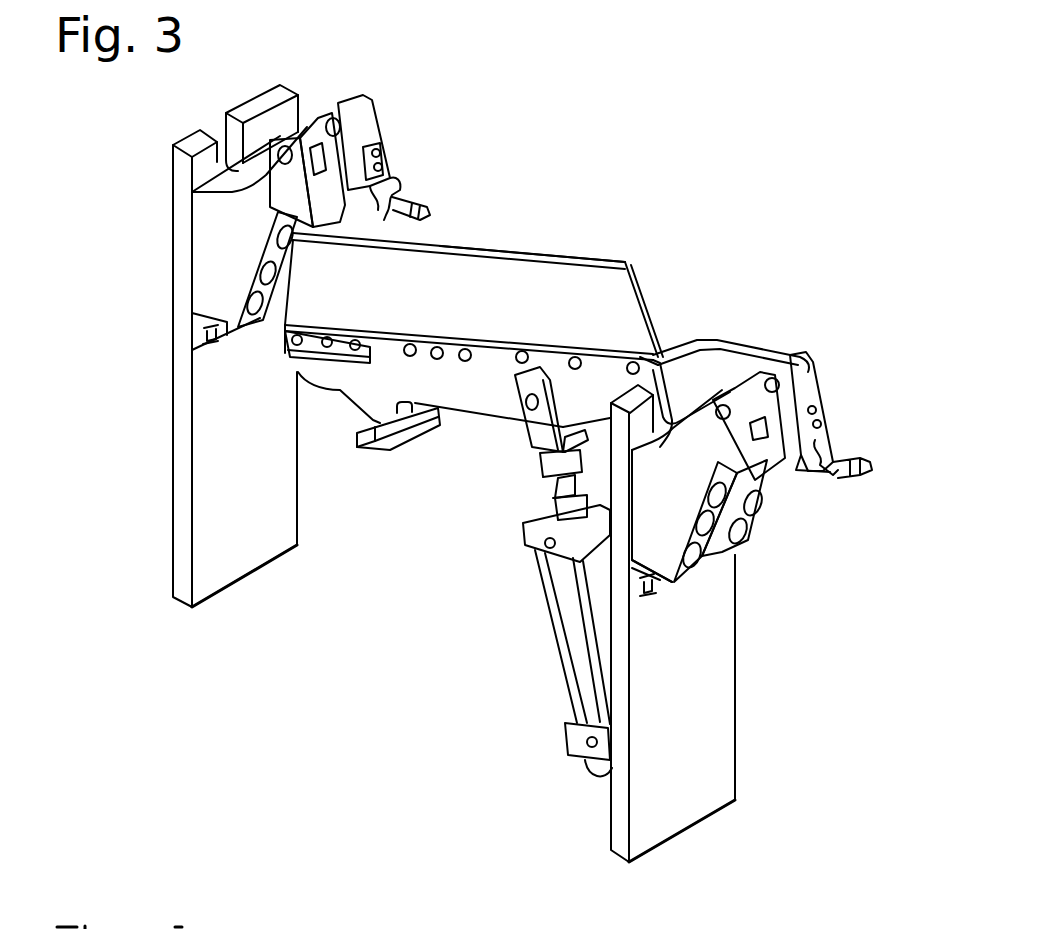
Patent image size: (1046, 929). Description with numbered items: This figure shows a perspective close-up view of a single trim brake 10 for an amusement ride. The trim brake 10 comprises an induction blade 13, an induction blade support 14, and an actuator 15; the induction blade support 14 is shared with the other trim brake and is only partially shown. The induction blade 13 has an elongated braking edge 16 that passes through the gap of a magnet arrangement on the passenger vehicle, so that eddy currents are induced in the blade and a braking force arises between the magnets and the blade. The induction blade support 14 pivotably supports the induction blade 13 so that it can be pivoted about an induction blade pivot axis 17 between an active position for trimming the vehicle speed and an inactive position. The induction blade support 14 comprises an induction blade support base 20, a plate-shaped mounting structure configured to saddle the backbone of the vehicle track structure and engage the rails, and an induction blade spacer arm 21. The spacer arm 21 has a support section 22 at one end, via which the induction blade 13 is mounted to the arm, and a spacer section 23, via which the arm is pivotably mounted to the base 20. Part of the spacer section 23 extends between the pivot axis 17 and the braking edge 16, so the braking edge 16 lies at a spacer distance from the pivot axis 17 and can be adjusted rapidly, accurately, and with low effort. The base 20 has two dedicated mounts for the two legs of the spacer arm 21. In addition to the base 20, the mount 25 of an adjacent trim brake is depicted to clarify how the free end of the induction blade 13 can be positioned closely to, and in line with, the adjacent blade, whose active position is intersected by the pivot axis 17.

The trim brake 10 is at (668, 178).
The induction blade 13 is at (500, 275).
The induction blade support 14 is at (490, 563).
The actuator 15 is at (543, 636).
The elongated braking edge 16 is at (600, 250).
The induction blade pivot axis 17 is at (808, 350).
The induction blade support base 20 is at (745, 572).
The induction blade spacer arm 21 is at (486, 440).
The support section 22 is at (453, 380).
The spacer section 23 is at (706, 327).
The mount 25 is at (405, 127).